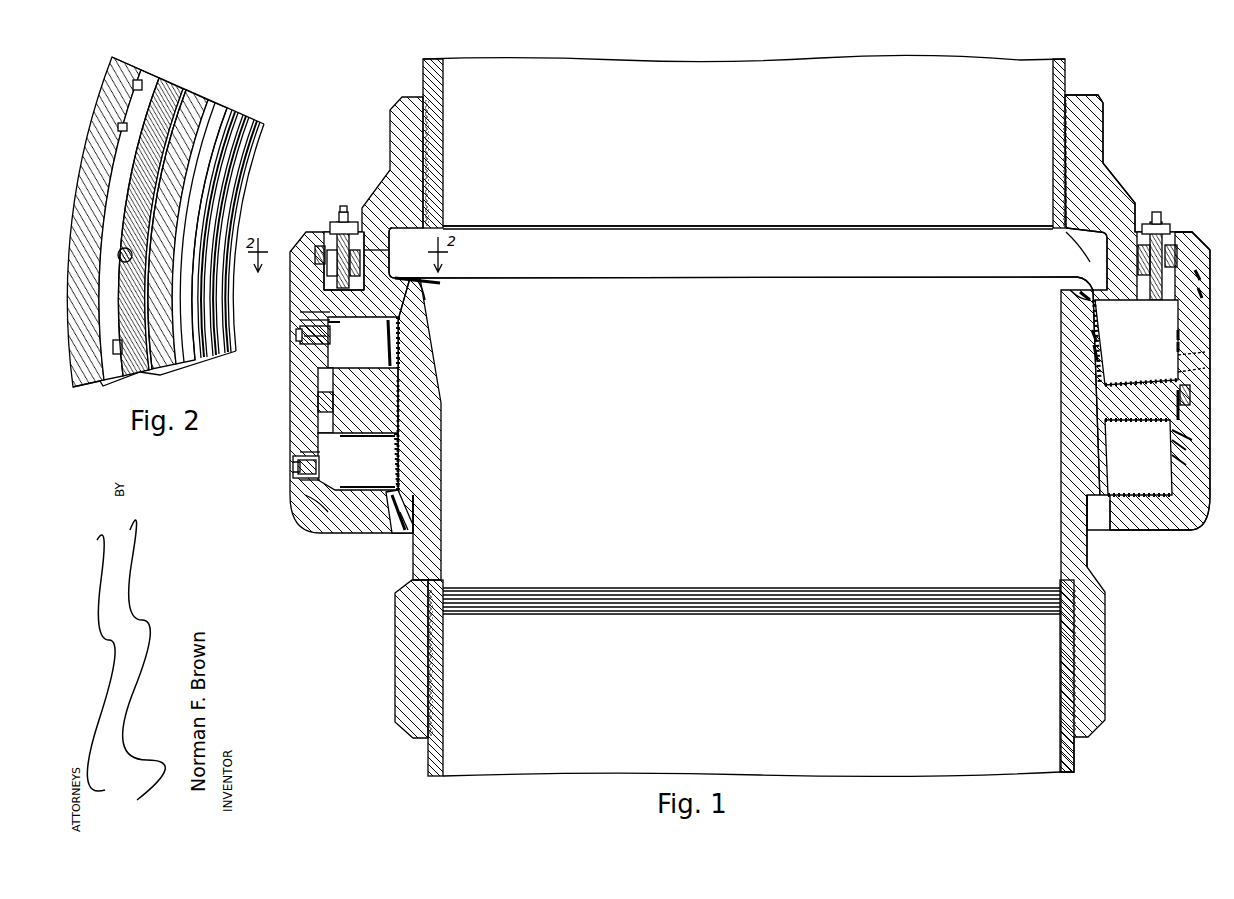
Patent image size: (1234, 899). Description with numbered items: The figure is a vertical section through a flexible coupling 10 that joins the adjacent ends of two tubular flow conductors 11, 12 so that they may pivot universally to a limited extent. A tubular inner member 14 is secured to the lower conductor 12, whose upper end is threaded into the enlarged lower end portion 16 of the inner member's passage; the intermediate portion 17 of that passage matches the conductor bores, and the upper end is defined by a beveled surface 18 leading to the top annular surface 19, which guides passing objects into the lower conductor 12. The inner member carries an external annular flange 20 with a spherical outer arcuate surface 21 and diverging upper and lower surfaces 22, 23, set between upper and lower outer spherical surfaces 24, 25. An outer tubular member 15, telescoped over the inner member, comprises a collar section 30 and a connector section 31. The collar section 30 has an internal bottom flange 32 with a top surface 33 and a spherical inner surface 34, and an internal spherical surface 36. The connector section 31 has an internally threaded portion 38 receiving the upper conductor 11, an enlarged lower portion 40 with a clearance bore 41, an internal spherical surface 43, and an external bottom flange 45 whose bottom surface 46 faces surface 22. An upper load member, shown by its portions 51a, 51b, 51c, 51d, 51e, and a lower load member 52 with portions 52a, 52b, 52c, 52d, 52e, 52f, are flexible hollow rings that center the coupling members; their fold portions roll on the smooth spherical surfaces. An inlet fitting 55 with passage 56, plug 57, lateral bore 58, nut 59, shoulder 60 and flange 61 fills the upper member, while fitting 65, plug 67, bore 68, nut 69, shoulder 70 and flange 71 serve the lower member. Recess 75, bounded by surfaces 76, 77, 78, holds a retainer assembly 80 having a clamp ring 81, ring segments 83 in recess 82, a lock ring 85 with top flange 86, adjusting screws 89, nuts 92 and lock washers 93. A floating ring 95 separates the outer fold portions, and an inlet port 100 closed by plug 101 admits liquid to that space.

In FIG. 1, the flexible coupling 10 is at (1170, 148).
In FIG. 1, the tubular member or flow conductor 11 is at (1061, 74).
In FIG. 1, the tubular member or flow conductor 12 is at (1076, 754).
In FIG. 1, the tubular inner member 14 is at (1116, 624).
In FIG. 1, the outer tubular member 15 is at (1199, 532).
In FIG. 1, the enlarged lower end portion of passage 16 is at (1071, 668).
In FIG. 1, the intermediate portion of passage 17 is at (1089, 565).
In FIG. 1, the beveled surface 18 is at (986, 273).
In FIG. 2, the beveled surface 18 is at (236, 168).
In FIG. 1, the top annular surface 19 is at (1046, 276).
In FIG. 2, the top annular surface 19 is at (240, 113).
In FIG. 1, the external annular flange 20 is at (1176, 416).
In FIG. 1, the outer arcuate surface 21 is at (1181, 407).
In FIG. 1, the upper surface of external flange 22 is at (388, 352).
In FIG. 1, the lower surface of external flange 23 is at (1136, 438).
In FIG. 1, the upper outer spherical surface 24 is at (420, 288).
In FIG. 1, the lower outer spherical surface 25 is at (415, 526).
In FIG. 1, the collar section 30 is at (1205, 320).
In FIG. 1, the connector section 31 is at (1120, 174).
In FIG. 2, the connector section 31 is at (198, 96).
In FIG. 1, the internal annular bottom flange 32 is at (1126, 531).
In FIG. 1, the top surface of bottom flange 33 is at (1162, 478).
In FIG. 1, the inner annular surface of bottom flange 34 is at (392, 532).
In FIG. 1, the internal surface of collar section 36 is at (1166, 352).
In FIG. 1, the upper internally threaded portion 38 is at (1096, 118).
In FIG. 1, the enlarged lower portion 40 is at (1082, 262).
In FIG. 1, the bore or passage 41 is at (1060, 218).
In FIG. 1, the internal spherical surface 43 is at (405, 288).
In FIG. 1, the external annular bottom flange 45 is at (1208, 256).
In FIG. 1, the bottom annular surface 46 is at (390, 338).
In FIG. 1, the outer annular portion 51a is at (1200, 293).
In FIG. 1, the outer annular tongue or fold portion 51b is at (1200, 277).
In FIG. 1, the lower portion 51c is at (1094, 352).
In FIG. 1, the inner annular portion 51d is at (1092, 336).
In FIG. 1, the upper annular tongue or fold portion 51e is at (1080, 298).
In FIG. 2, the upper annular tongue or fold portion 51e is at (214, 104).
In FIG. 1, the lower load member 52 is at (1192, 442).
In FIG. 1, the outer portion 52a is at (1190, 388).
In FIG. 1, the outer annular upper fold or tongue portion 52b is at (1182, 457).
In FIG. 1, the upper annular portion 52c is at (358, 440).
In FIG. 1, the inner annular portion 52d is at (402, 455).
In FIG. 1, the inner annular fold or tongue portion 52e is at (404, 540).
In FIG. 1, the lower annular portion 52f is at (352, 485).
In FIG. 1, the inlet fitting 55 is at (304, 348).
In FIG. 1, the passage 56 is at (326, 366).
In FIG. 1, the closure or plug 57 is at (298, 332).
In FIG. 1, the lateral bore 58 is at (304, 322).
In FIG. 1, the nut 59 is at (300, 339).
In FIG. 1, the annular shoulder 60 is at (305, 312).
In FIG. 1, the inner external flange 61 is at (330, 325).
In FIG. 1, the fitting 65 is at (306, 512).
In FIG. 1, the plug 67 is at (298, 474).
In FIG. 1, the lateral bore or aperture 68 is at (302, 482).
In FIG. 1, the nut 69 is at (294, 466).
In FIG. 1, the shoulder 70 is at (300, 456).
In FIG. 1, the inner external annular flange 71 is at (334, 464).
In FIG. 1, the annular upwardly opening space or recess 75 is at (340, 206).
In FIG. 1, the outer external surface 76 is at (358, 222).
In FIG. 1, the upper surface of external bottom flange 77 is at (1196, 237).
In FIG. 1, the internal annular surface 78 is at (324, 286).
In FIG. 1, the retainer assembly 80 is at (345, 180).
In FIG. 1, the clamp ring 81 is at (380, 262).
In FIG. 2, the clamp ring 81 is at (165, 82).
In FIG. 1, the internal annular recess 82 is at (316, 260).
In FIG. 2, the internal annular recess 82 is at (112, 90).
In FIG. 1, the ring segments 83 is at (318, 256).
In FIG. 2, the ring segments 83 is at (138, 72).
In FIG. 1, the lock ring 85 is at (386, 252).
In FIG. 2, the lock ring 85 is at (180, 88).
In FIG. 1, the external annular top flange 86 is at (327, 250).
In FIG. 1, the adjusting screws 89 is at (348, 206).
In FIG. 2, the adjusting screws 89 is at (133, 256).
In FIG. 1, the nuts 92 is at (1160, 222).
In FIG. 1, the lock washers 93 is at (1175, 240).
In FIG. 1, the annular floating ring 95 is at (318, 400).
In FIG. 1, the inlet port 100 is at (1204, 358).
In FIG. 1, the plug 101 is at (1204, 372).